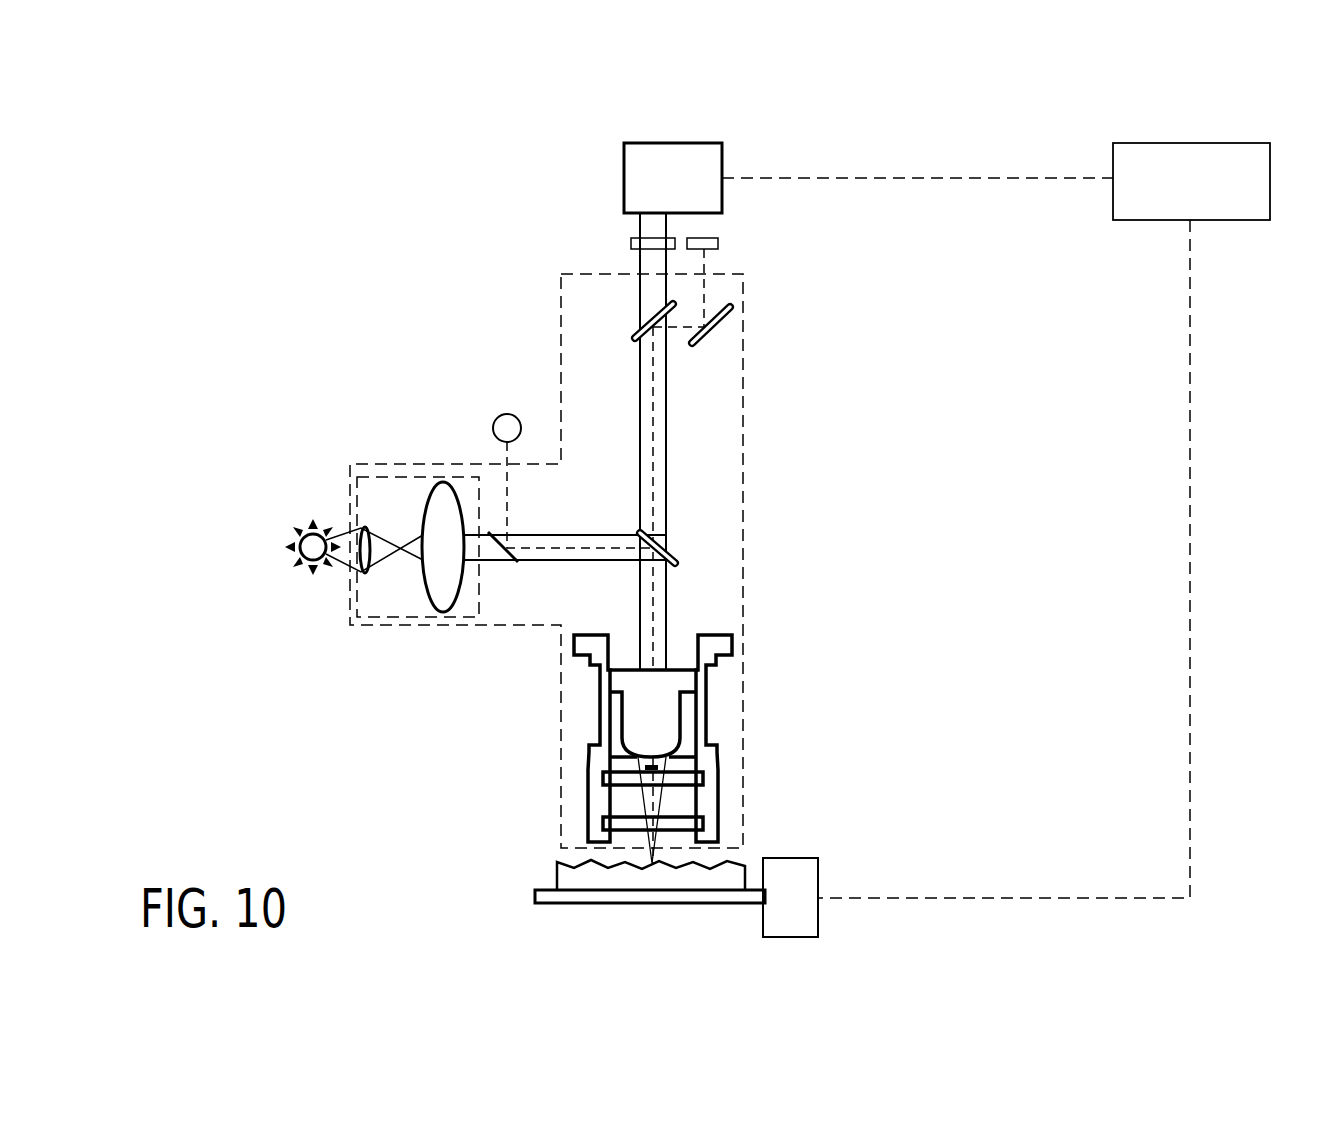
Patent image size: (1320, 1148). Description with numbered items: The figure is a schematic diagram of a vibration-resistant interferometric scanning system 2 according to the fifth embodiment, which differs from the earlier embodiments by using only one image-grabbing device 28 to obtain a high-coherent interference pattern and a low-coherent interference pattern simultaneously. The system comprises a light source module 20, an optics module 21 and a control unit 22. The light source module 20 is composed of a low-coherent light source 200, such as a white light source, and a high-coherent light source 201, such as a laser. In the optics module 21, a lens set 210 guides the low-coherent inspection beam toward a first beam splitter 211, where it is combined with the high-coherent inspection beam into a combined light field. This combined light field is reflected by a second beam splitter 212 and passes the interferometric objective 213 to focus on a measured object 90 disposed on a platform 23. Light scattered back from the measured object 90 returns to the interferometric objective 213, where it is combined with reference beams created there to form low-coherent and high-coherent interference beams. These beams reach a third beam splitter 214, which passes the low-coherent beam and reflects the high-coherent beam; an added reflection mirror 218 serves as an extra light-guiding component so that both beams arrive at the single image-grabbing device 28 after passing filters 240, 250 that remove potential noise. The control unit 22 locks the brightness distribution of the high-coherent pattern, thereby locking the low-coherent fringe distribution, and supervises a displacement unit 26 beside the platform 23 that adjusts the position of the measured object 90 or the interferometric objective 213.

The vibration-resistant interferometric scanning system 2 is at (331, 161).
The light source module 20 is at (204, 401).
The low-coherent light source 200 is at (306, 531).
The high-coherent light source 201 is at (494, 424).
The optics module 21 is at (535, 251).
The lens set 210 is at (387, 621).
The first beam splitter 211 is at (513, 563).
The second beam splitter 212 is at (674, 568).
The interferometric objective 213 is at (572, 737).
The third beam splitter 214 is at (633, 336).
The reflection mirror 218 is at (723, 329).
The control unit 22 is at (1208, 198).
The platform 23 is at (545, 905).
The filter 240 is at (633, 241).
The filter 250 is at (721, 241).
The displacement unit 26 is at (806, 911).
The image-grabbing device 28 is at (686, 191).
The measured object 90 is at (563, 877).